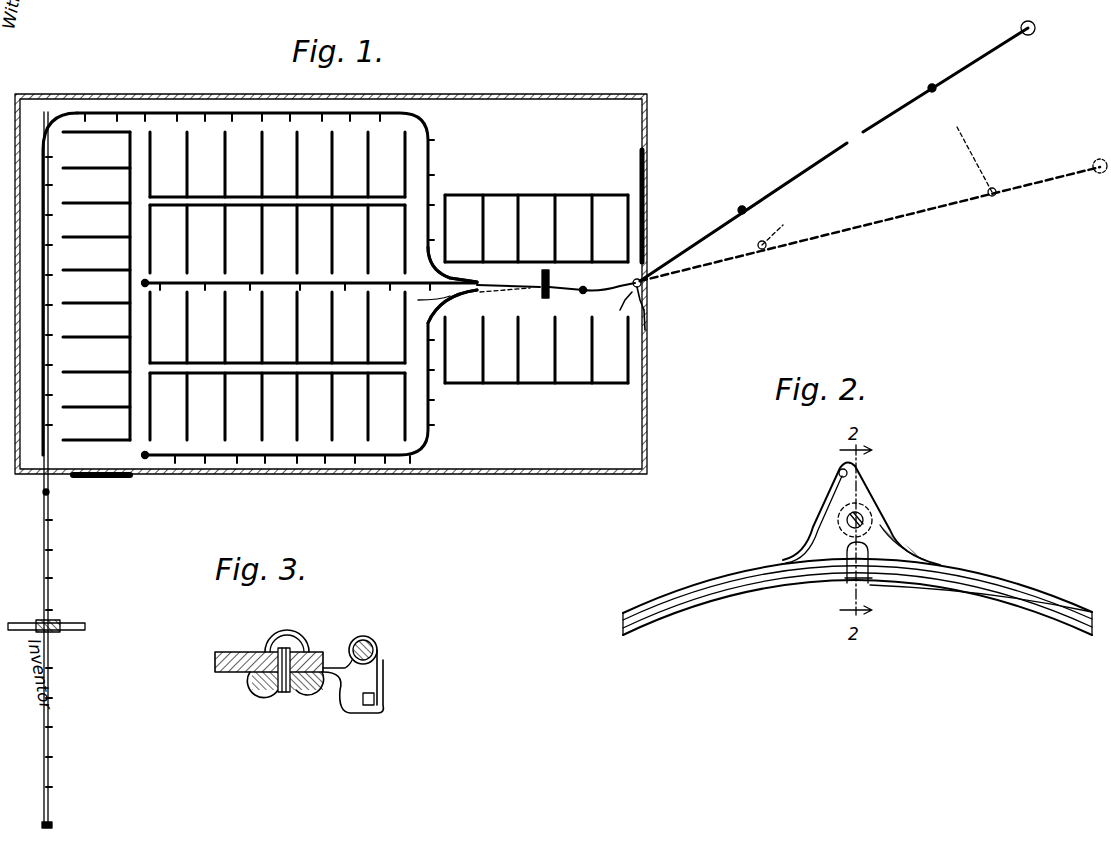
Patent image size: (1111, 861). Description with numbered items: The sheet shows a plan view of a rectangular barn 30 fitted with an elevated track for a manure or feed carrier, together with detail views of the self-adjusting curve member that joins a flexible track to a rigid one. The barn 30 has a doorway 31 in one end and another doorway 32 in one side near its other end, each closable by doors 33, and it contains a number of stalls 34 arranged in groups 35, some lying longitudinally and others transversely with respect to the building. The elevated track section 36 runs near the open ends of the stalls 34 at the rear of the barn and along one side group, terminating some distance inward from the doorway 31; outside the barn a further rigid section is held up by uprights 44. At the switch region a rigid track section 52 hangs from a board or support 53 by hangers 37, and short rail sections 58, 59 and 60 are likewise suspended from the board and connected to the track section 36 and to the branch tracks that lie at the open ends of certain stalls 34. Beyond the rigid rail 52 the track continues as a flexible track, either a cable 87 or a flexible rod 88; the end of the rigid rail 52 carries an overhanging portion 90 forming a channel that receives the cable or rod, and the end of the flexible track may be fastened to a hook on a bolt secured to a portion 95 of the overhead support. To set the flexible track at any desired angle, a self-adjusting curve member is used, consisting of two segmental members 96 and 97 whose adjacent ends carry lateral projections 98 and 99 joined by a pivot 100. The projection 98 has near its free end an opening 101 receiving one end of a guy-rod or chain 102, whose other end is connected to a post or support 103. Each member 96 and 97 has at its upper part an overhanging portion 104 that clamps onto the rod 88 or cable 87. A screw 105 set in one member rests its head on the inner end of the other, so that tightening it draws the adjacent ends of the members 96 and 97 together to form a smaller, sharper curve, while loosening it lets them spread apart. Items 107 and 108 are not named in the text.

In FIG. 1, the barn 30 is at (647, 395).
In FIG. 1, the doorway 31 is at (646, 302).
In FIG. 1, the doorway 32 is at (28, 468).
In FIG. 1, the doors 33 is at (646, 200).
In FIG. 1, the stalls 34 is at (308, 174).
In FIG. 1, the groups of stalls 35 is at (128, 222).
In FIG. 1, the track section 36 is at (165, 113).
In FIG. 1, the hangers 37 is at (262, 114).
In FIG. 1, the uprights 44 is at (58, 623).
In FIG. 1, the rigid track section 52 is at (540, 288).
In FIG. 1, the board or support 53 is at (55, 820).
In FIG. 1, the short rail section 58 is at (436, 262).
In FIG. 1, the short rail section 59 is at (432, 310).
In FIG. 1, the short rail section 60 is at (468, 300).
In FIG. 1, the cable 87 is at (798, 170).
In FIG. 3, the flexible rod 88 is at (378, 645).
In FIG. 1, the overhanging portion 90 is at (595, 288).
In FIG. 1, the portion of the overhead support 95 is at (552, 287).
In FIG. 1, the segmental member 96 is at (624, 300).
In FIG. 2, the segmental member 96 is at (718, 578).
In FIG. 2, the segmental member 97 is at (968, 582).
In FIG. 3, the segmental member 97 is at (385, 680).
In FIG. 2, the lateral projection 98 is at (812, 532).
In FIG. 3, the lateral projection 98 is at (230, 652).
In FIG. 2, the lateral projection 99 is at (898, 542).
In FIG. 3, the lateral projection 99 is at (268, 693).
In FIG. 2, the pivot 100 is at (870, 512).
In FIG. 3, the pivot 100 is at (287, 635).
In FIG. 2, the opening 101 is at (838, 473).
In FIG. 1, the guy-rod or chain 102 is at (643, 286).
In FIG. 1, the post or support 103 is at (647, 322).
In FIG. 3, the overhanging portion 104 is at (362, 636).
In FIG. 2, the screw 105 is at (860, 585).
In FIG. 3, the screw 105 is at (385, 712).
In FIG. 1, the handle knob 107 is at (1020, 40).
In FIG. 1, the joint 108 is at (934, 90).